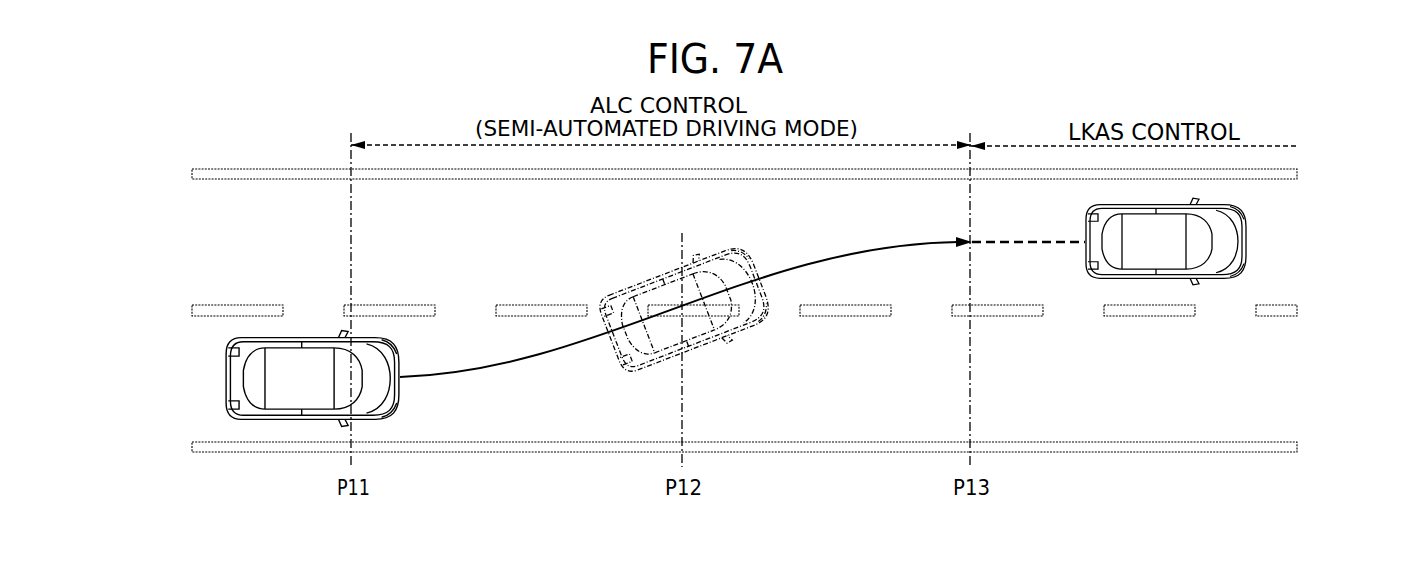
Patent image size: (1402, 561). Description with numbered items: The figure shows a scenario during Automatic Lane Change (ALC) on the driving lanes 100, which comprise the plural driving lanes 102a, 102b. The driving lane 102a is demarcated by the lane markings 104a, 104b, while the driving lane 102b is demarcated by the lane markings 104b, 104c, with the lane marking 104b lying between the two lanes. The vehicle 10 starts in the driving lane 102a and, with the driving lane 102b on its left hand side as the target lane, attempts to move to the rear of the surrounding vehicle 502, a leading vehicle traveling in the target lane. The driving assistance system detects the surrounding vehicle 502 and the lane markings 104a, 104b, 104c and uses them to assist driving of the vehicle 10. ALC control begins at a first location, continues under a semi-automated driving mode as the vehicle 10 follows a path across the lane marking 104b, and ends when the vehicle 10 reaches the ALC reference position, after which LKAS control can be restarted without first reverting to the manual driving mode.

The driving lanes 100 is at (176, 151).
The driving lane 102a is at (181, 312).
The driving lane 102b is at (181, 178).
The lane marking 104a is at (1297, 447).
The lane marking 104b is at (1297, 311).
The lane marking 104c is at (1297, 174).
The vehicle 10 is at (401, 386).
The surrounding vehicle 502 is at (1240, 222).